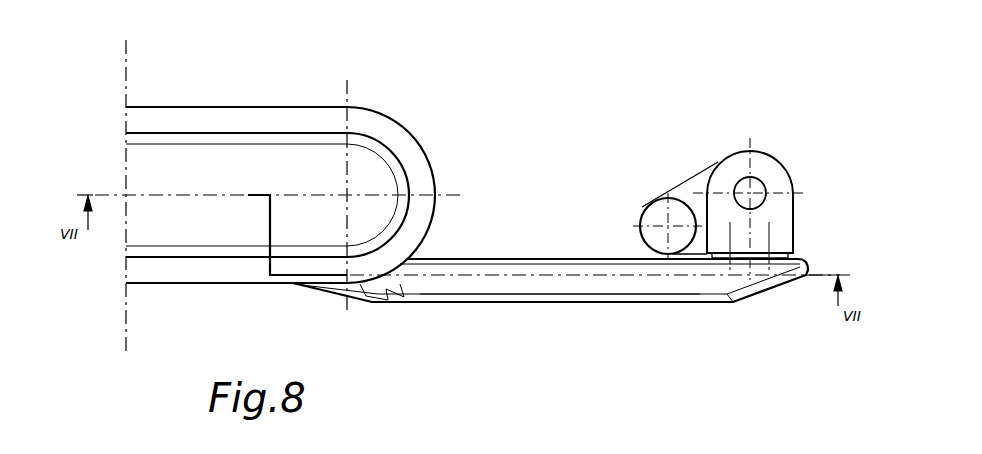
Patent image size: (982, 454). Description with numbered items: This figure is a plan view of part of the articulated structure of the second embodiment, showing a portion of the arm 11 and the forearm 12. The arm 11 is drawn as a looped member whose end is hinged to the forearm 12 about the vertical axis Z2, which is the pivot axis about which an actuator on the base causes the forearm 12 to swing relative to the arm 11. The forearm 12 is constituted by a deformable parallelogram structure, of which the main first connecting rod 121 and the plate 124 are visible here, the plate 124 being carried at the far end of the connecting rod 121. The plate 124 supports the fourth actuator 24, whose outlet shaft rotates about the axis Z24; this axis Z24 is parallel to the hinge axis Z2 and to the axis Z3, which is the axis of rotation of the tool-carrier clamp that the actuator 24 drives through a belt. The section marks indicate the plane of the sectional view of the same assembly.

The arm 11 is at (267, 121).
The forearm 12 is at (474, 321).
The main first connecting rod 121 is at (607, 283).
The fourth actuator 24 is at (650, 213).
The plate 124 is at (779, 229).
The hinge axis Z2 is at (349, 192).
The axis of rotation of the outlet shaft Z24 is at (667, 224).
The axis of rotation of the tool-carrier clamp Z3 is at (752, 191).